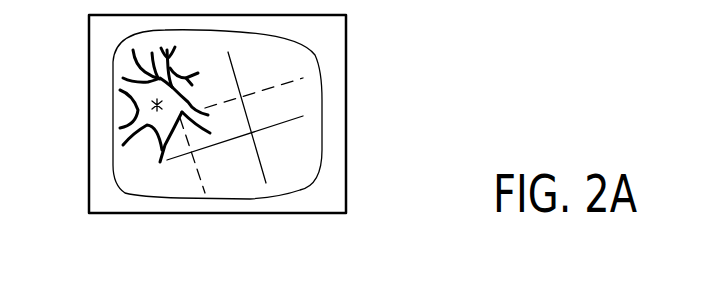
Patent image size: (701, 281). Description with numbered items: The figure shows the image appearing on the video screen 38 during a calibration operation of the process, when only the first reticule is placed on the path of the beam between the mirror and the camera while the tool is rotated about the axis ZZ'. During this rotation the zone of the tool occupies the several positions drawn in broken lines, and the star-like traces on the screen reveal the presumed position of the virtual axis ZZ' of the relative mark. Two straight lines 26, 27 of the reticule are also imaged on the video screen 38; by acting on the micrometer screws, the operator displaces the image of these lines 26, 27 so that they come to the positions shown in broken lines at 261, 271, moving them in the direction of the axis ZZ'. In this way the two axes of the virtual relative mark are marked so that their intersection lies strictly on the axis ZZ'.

The video screen 38 is at (333, 197).
The line of the reticule 26 is at (302, 115).
The displaced image of line 26 261 is at (303, 78).
The line of the reticule 27 is at (267, 178).
The displaced image of line 27 271 is at (195, 173).
The axis Z'Z ZZ' is at (94, 74).